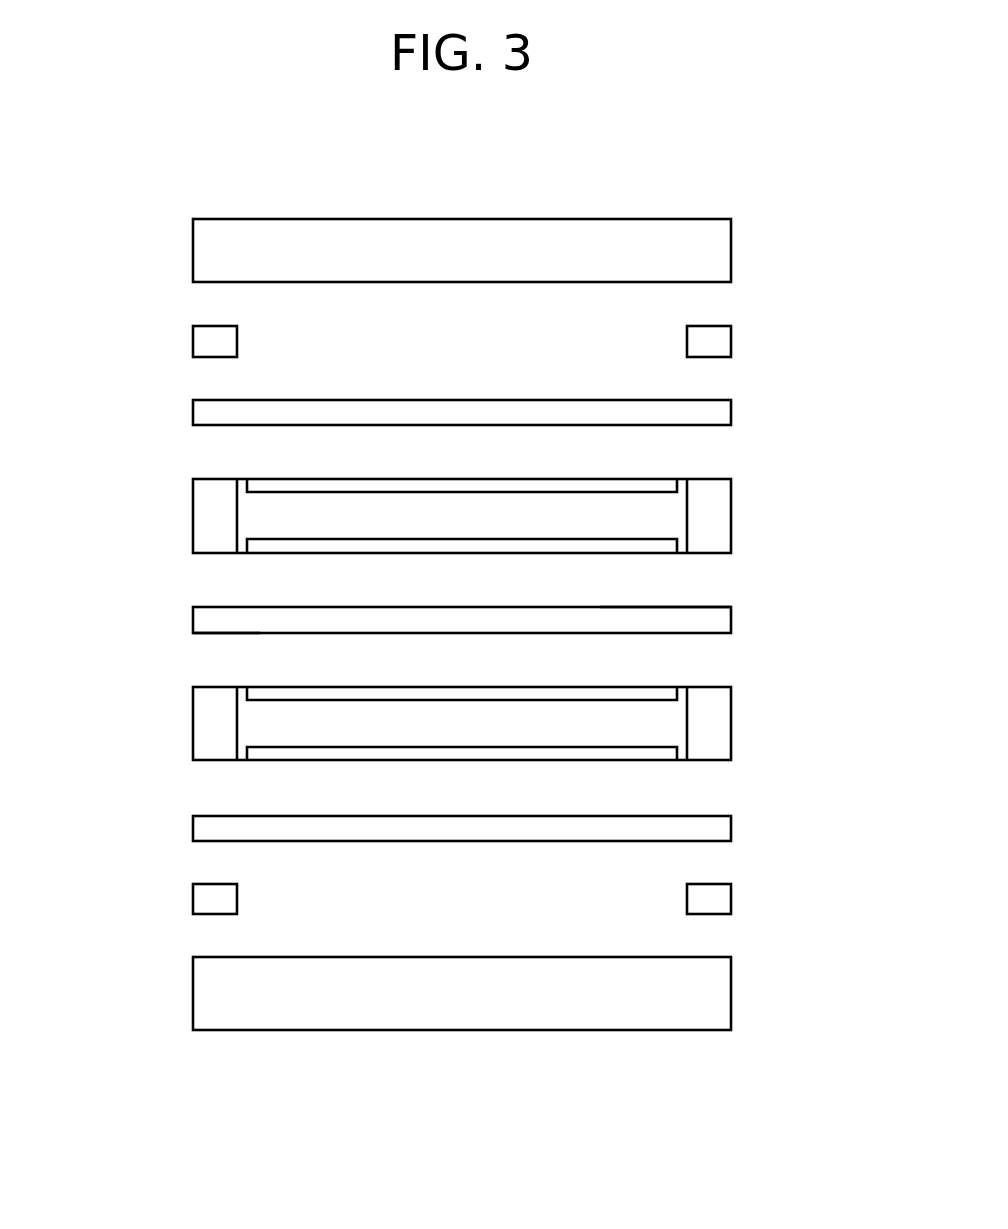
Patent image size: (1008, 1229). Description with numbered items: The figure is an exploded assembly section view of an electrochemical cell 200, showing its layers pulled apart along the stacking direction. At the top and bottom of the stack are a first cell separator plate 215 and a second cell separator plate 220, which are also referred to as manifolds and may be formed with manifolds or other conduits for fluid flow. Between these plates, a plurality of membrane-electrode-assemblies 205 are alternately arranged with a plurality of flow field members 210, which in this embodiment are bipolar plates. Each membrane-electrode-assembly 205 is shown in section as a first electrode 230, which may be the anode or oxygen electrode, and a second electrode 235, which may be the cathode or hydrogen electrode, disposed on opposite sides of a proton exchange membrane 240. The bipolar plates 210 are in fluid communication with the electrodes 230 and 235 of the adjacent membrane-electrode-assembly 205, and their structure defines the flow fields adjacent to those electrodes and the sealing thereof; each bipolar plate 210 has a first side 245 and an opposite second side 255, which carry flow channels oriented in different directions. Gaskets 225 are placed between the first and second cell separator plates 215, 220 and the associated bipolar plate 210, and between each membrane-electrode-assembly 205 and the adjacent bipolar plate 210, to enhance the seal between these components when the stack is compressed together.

The cell 200 is at (92, 274).
The membrane-electrode-assembly 205 is at (731, 512).
The flow field member 210 is at (731, 412).
The first cell separator plate 215 is at (731, 250).
The second cell separator plate 220 is at (731, 994).
The gasket 225 is at (731, 341).
The first electrode 230 is at (350, 553).
The second electrode 235 is at (350, 479).
The proton exchange membrane 240 is at (265, 724).
The first side 245 is at (683, 607).
The second side 255 is at (210, 634).